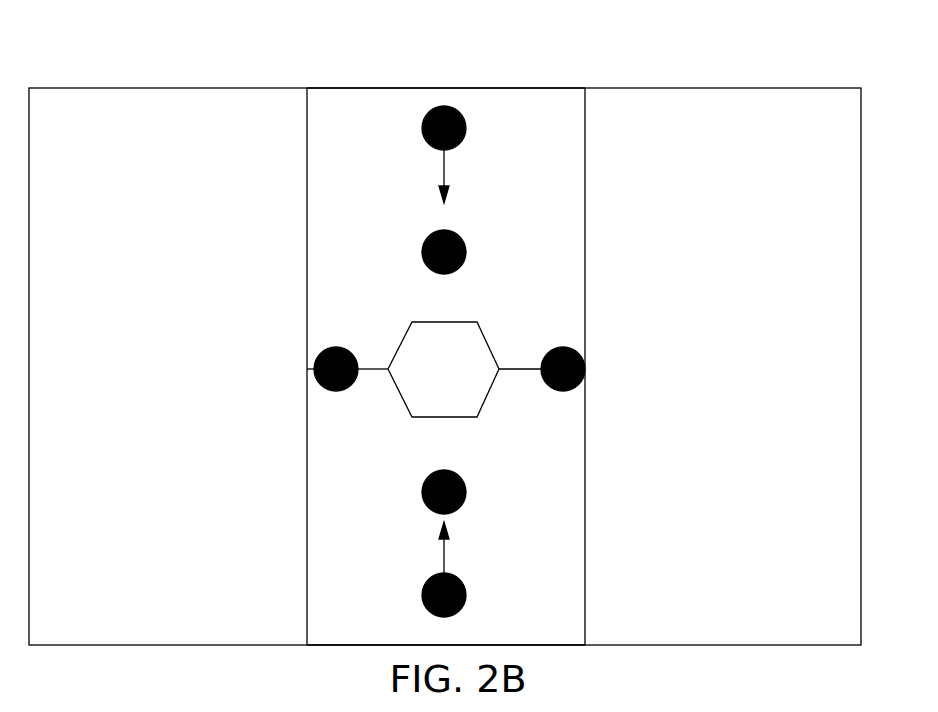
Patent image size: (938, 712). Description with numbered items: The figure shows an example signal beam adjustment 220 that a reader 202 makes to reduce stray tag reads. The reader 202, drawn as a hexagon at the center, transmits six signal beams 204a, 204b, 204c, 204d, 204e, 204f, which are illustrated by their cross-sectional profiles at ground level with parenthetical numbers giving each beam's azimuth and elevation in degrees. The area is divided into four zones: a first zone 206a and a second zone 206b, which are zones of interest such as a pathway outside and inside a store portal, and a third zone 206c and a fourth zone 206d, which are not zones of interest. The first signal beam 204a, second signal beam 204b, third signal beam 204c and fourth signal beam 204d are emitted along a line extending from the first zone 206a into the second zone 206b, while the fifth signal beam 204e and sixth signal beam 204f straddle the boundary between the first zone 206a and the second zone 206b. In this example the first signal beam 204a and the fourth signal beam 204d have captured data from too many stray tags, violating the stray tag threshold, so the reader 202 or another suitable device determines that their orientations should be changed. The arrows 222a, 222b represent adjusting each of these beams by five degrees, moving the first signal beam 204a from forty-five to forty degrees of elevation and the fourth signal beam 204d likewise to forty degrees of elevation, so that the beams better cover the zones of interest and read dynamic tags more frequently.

The signal beam adjustment 220 is at (136, 66).
The reader 202 is at (488, 345).
The first signal beam 204a is at (466, 127).
The second signal beam 204b is at (466, 251).
The third signal beam 204c is at (466, 491).
The fourth signal beam 204d is at (466, 594).
The fifth signal beam 204e is at (334, 347).
The sixth signal beam 204f is at (585, 369).
The first zone 206a is at (563, 201).
The second zone 206b is at (333, 551).
The third zone 206c is at (128, 320).
The fourth zone 206d is at (753, 320).
The arrow 222a is at (444, 170).
The arrow 222b is at (444, 550).